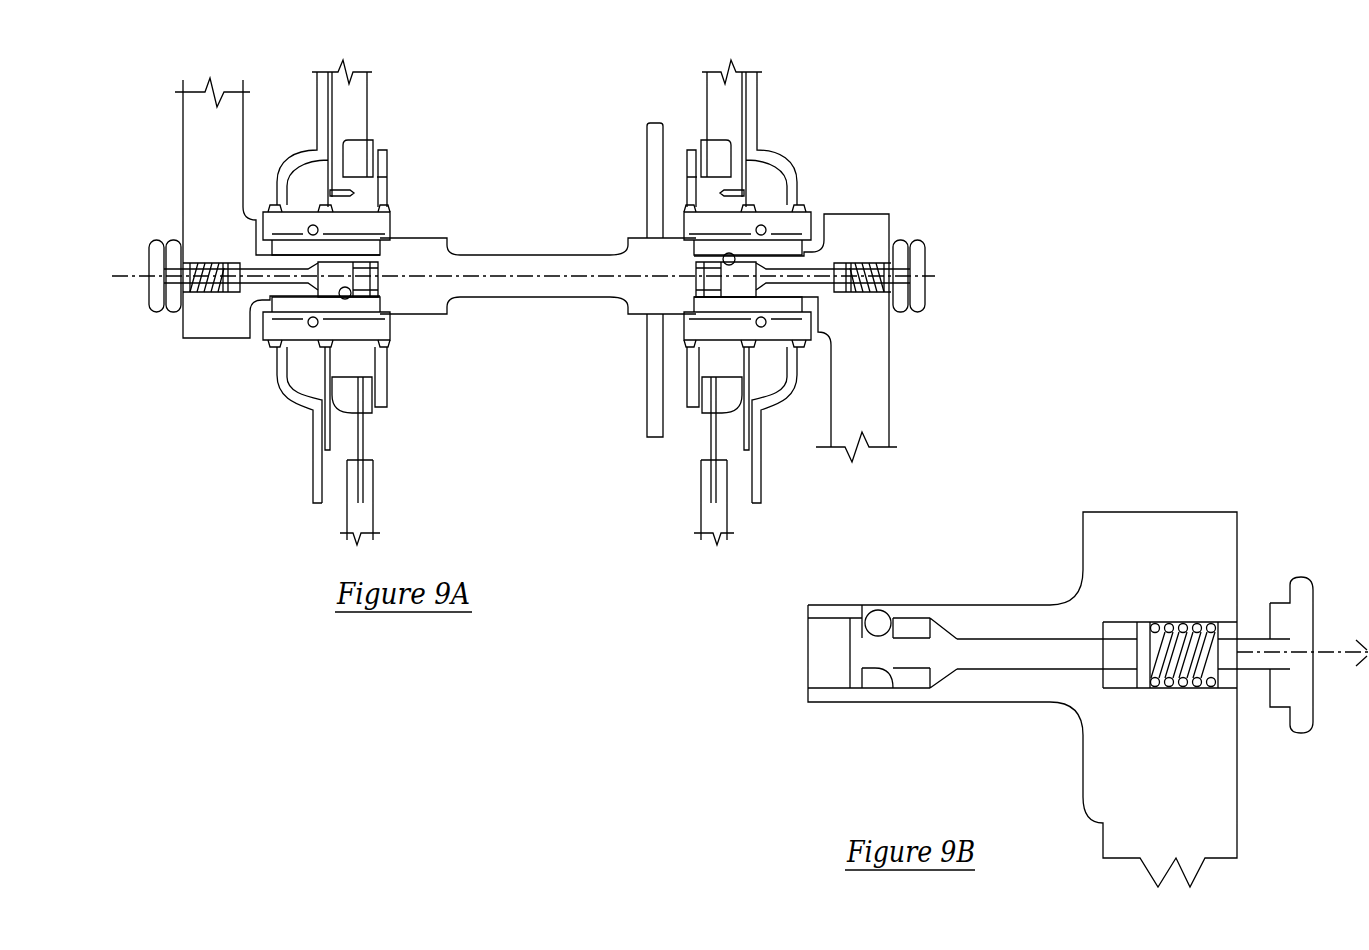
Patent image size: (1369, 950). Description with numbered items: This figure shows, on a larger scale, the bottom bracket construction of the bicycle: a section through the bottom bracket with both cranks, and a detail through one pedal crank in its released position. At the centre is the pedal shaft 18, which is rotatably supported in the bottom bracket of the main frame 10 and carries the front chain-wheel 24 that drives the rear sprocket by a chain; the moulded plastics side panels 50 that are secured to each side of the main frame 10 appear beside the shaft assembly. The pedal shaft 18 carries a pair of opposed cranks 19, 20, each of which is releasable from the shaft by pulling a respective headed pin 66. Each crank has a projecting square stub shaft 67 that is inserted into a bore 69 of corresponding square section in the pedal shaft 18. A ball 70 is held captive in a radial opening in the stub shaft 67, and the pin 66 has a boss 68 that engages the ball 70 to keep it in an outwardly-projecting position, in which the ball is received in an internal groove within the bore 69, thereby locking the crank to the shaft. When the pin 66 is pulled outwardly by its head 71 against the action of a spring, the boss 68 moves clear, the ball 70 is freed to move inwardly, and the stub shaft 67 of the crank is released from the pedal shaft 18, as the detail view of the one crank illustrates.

In FIG. 9A, the main frame 10 is at (352, 98).
In FIG. 9A, the pedal shaft 18 is at (532, 265).
In FIG. 9A, the crank 19 is at (212, 200).
In FIG. 9A, the crank 20 is at (863, 347).
In FIG. 9A, the front chain-wheel 24 is at (655, 187).
In FIG. 9A, the side panel 50 is at (322, 93).
In FIG. 9A, the headed pin 66 is at (813, 273).
In FIG. 9B, the headed pin 66 is at (1252, 653).
In FIG. 9B, the stub shaft 67 is at (1058, 685).
In FIG. 9B, the boss 68 is at (908, 653).
In FIG. 9A, the bore 69 is at (697, 300).
In FIG. 9A, the ball 70 is at (346, 300).
In FIG. 9B, the ball 70 is at (880, 620).
In FIG. 9A, the head 71 is at (895, 295).
In FIG. 9B, the head 71 is at (1290, 680).